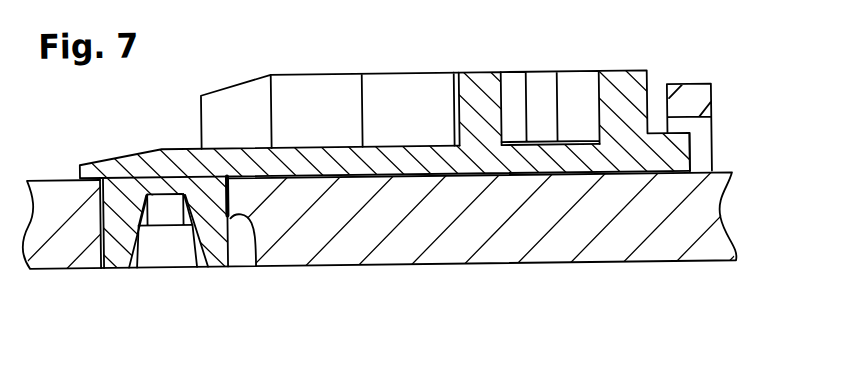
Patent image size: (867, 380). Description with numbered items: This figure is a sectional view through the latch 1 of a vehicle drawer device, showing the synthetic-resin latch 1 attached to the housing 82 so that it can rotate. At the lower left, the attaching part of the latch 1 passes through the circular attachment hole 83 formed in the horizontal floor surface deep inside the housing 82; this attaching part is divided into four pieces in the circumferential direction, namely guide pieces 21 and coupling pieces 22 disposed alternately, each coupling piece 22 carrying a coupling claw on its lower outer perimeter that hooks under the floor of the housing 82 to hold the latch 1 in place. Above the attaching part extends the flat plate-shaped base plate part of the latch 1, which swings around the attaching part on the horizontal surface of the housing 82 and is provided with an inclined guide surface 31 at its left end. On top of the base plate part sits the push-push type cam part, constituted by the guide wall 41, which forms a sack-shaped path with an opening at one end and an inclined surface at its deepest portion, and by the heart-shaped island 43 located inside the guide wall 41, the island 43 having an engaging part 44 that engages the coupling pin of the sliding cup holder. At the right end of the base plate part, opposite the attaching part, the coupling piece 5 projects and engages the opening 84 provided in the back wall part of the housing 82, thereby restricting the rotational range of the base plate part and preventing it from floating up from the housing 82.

The latch 1 is at (653, 75).
The coupling piece 5 is at (685, 149).
The guide pieces 21 is at (120, 242).
The coupling pieces 22 is at (165, 227).
The guide surface 31 is at (113, 158).
The guide wall 41 is at (340, 105).
The heart-shaped island 43 is at (483, 96).
The engaging part 44 is at (515, 98).
The housing 82 is at (540, 250).
The attachment hole 83 is at (255, 268).
The opening 84 is at (703, 160).